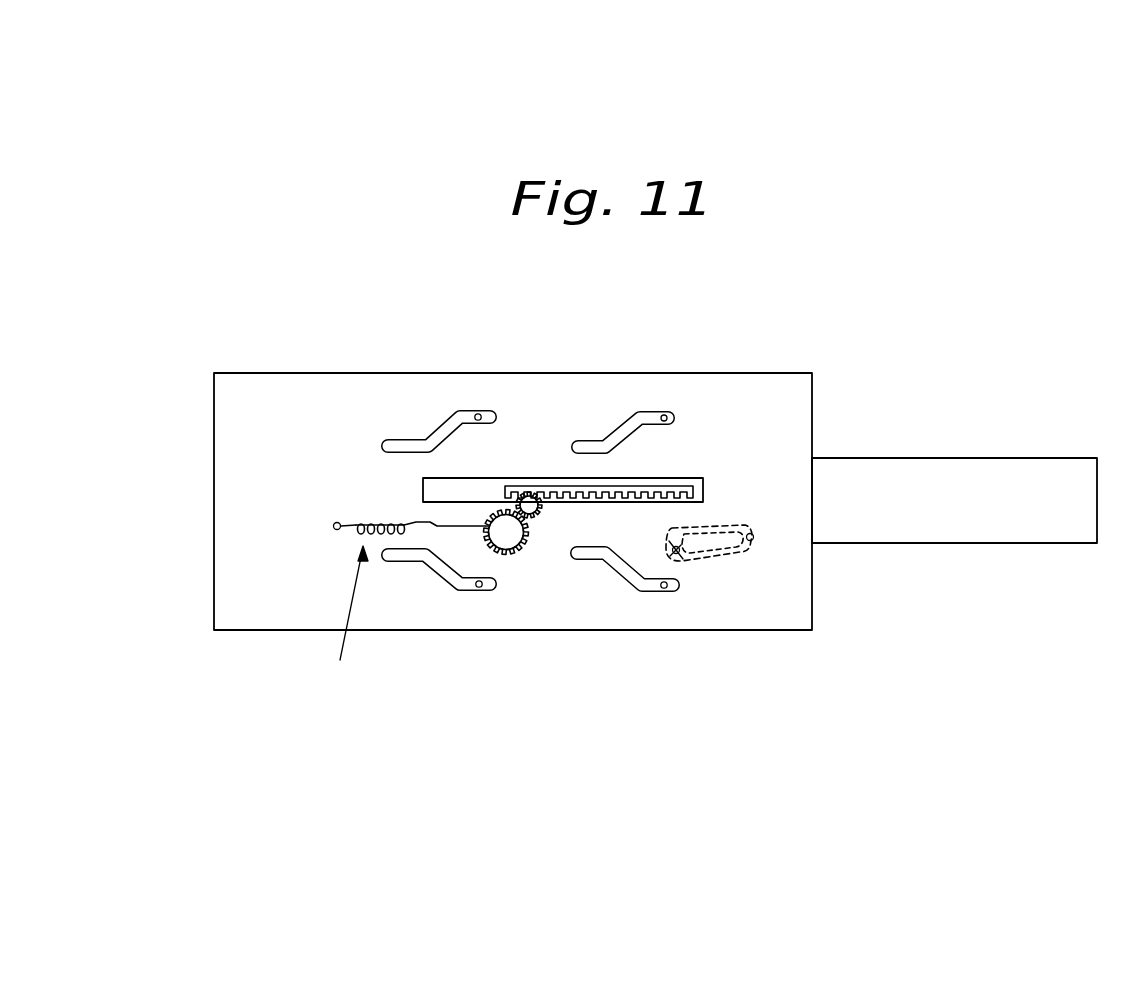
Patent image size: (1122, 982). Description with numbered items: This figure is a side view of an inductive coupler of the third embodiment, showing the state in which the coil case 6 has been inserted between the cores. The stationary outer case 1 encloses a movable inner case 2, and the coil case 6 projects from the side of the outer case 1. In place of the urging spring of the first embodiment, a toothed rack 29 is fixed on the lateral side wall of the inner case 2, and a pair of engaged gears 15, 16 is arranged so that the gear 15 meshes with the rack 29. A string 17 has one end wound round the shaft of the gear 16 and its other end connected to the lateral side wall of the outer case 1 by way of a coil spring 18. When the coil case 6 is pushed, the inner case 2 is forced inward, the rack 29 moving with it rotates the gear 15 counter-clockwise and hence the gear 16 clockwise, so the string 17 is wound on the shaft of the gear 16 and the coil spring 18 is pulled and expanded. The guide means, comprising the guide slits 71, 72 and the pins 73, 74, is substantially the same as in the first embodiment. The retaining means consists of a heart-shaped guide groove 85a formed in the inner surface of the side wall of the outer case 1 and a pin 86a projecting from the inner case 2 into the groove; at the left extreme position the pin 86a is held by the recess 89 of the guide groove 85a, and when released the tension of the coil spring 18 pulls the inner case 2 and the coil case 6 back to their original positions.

The outer case 1 is at (280, 614).
The inner case 2 is at (477, 490).
The coil case 6 is at (1008, 532).
The gear 15 is at (529, 508).
The gear 16 is at (508, 536).
The string 17 is at (433, 522).
The coil spring 18 is at (345, 623).
The toothed rack 29 is at (572, 497).
The guide slit 71 is at (438, 433).
The guide slit 72 is at (662, 588).
The pin 73 is at (481, 414).
The pin 74 is at (479, 587).
The guide groove 85a is at (730, 556).
The pin 86a is at (752, 541).
The recess 89 is at (680, 562).